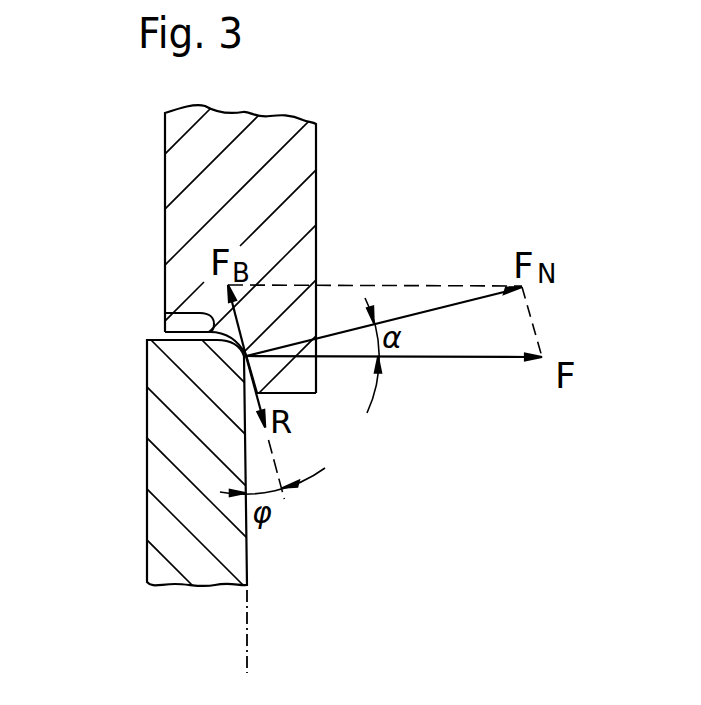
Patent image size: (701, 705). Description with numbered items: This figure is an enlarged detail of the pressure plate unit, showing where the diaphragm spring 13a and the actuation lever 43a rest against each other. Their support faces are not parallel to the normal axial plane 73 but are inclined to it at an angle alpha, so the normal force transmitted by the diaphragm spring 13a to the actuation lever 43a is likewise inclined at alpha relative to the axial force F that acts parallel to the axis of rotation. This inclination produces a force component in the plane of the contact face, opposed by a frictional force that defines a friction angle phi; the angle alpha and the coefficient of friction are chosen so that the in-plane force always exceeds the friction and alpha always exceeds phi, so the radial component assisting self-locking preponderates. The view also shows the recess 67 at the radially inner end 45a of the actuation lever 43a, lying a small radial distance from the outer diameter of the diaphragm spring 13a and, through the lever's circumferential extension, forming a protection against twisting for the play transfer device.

The actuation lever 43a is at (302, 149).
The radially inner end of the actuation lever 45a is at (314, 380).
The recess 67 is at (166, 313).
The diaphragm spring 13a is at (172, 512).
The normal axial plane 73 is at (248, 624).